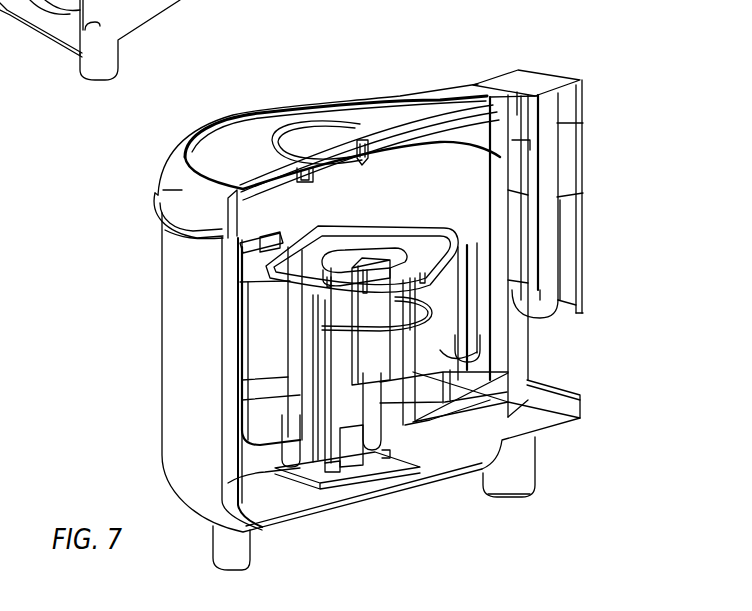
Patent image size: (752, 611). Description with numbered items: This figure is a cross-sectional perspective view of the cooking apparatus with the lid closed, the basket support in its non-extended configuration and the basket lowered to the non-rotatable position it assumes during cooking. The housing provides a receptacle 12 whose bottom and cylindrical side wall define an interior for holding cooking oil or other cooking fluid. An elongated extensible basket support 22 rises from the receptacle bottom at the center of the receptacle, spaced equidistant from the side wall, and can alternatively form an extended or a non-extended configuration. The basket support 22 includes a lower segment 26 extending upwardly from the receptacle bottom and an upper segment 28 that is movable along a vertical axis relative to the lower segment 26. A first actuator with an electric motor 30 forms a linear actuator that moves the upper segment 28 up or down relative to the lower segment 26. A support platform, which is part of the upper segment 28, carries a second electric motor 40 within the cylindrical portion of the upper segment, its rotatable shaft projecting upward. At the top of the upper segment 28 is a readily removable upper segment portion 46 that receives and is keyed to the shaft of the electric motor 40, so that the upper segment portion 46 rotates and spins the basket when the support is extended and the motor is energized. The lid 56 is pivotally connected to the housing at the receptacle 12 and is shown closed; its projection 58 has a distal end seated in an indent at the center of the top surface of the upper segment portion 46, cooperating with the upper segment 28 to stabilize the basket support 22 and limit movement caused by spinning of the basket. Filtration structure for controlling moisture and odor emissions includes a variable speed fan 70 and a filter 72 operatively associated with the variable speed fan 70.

The receptacle 12 is at (195, 375).
The extensible basket support 22 is at (329, 474).
The lower segment 26 is at (387, 450).
The upper segment 28 is at (387, 357).
The electric motor 30 is at (353, 447).
The electric motor 40 is at (505, 400).
The upper segment portion 46 is at (340, 257).
The lid 56 is at (241, 143).
The projection 58 is at (360, 144).
The variable speed fan 70 is at (567, 255).
The filter 72 is at (528, 127).